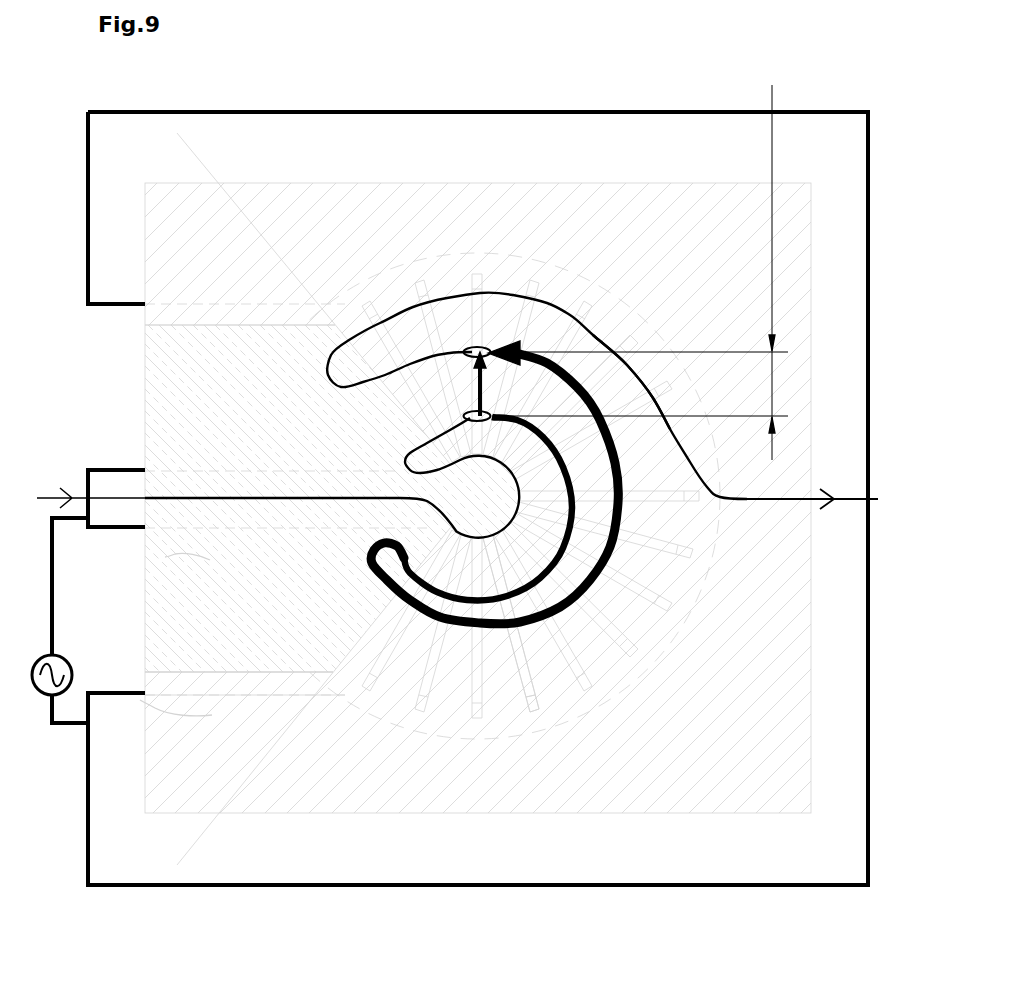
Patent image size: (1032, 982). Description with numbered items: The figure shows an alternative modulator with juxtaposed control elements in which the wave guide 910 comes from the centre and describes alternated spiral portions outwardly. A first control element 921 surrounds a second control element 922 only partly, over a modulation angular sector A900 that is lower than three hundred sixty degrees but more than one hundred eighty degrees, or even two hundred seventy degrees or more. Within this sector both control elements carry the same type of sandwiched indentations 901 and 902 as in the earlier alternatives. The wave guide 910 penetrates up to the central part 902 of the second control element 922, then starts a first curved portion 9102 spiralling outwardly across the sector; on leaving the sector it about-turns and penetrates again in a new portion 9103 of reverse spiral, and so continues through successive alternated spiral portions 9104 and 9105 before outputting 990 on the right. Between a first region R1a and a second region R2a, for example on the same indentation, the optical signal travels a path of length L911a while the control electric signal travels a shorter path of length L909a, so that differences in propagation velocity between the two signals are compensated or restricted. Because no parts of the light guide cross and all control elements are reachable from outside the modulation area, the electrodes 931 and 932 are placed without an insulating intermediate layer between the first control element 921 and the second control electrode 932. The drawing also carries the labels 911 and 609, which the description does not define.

The electrode 931 is at (122, 283).
The second control electrode 932 is at (120, 483).
The second control element 922 is at (165, 557).
The first control element 921 is at (210, 713).
The input light axis 911 is at (50, 497).
The wave guide 910 is at (197, 495).
The output 990 is at (843, 497).
The AC power source 609 is at (40, 690).
The sandwiched indentations 901 is at (437, 700).
The sandwiched indentations 902 is at (500, 700).
The first curved portion 9102 is at (630, 622).
The new portion of reverse spiral 9103 is at (645, 595).
The spiral portion 9104 is at (660, 545).
The spiral portion 9105 is at (640, 502).
The modulation angular sector A900 is at (202, 132).
The first region R1a is at (443, 353).
The second region R2a is at (485, 412).
The optical signal path length L911a is at (642, 380).
The control electric signal path length L909a is at (772, 86).